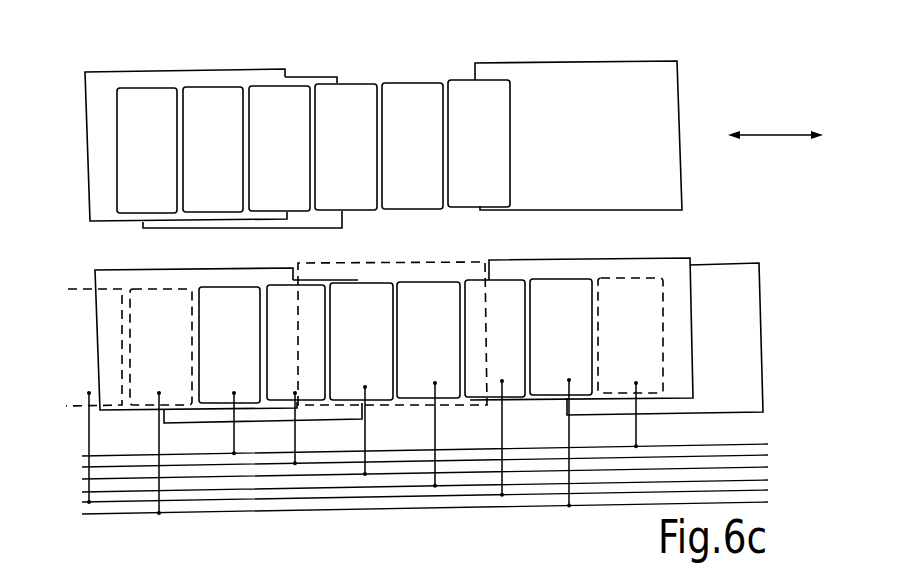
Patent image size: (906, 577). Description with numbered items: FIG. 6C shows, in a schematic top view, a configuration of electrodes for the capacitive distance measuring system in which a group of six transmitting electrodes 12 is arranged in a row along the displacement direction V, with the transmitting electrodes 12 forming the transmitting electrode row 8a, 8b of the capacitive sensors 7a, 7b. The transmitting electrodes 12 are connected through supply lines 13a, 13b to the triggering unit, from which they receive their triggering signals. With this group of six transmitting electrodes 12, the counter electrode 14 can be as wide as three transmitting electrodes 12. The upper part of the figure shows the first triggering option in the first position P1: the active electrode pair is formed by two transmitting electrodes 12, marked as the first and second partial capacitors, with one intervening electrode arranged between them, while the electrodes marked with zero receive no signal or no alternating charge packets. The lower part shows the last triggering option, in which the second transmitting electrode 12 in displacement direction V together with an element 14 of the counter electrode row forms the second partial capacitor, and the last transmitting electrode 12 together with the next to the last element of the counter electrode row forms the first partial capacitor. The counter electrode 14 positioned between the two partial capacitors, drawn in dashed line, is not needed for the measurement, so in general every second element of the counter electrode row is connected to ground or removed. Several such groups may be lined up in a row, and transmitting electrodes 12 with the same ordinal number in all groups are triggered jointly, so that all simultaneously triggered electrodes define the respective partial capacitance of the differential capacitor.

The first position P1 is at (99, 104).
The transmitting electrode 12 is at (125, 98).
The first capacitive sensor 7a is at (344, 287).
The second capacitive sensor 7b is at (271, 79).
The transmitting electrode row 8a is at (636, 197).
The transmitting electrode row 8b is at (517, 124).
The supply line 13a is at (425, 473).
The supply line 13b is at (258, 480).
The counter electrode 14 is at (655, 105).
The displacement direction V is at (775, 135).